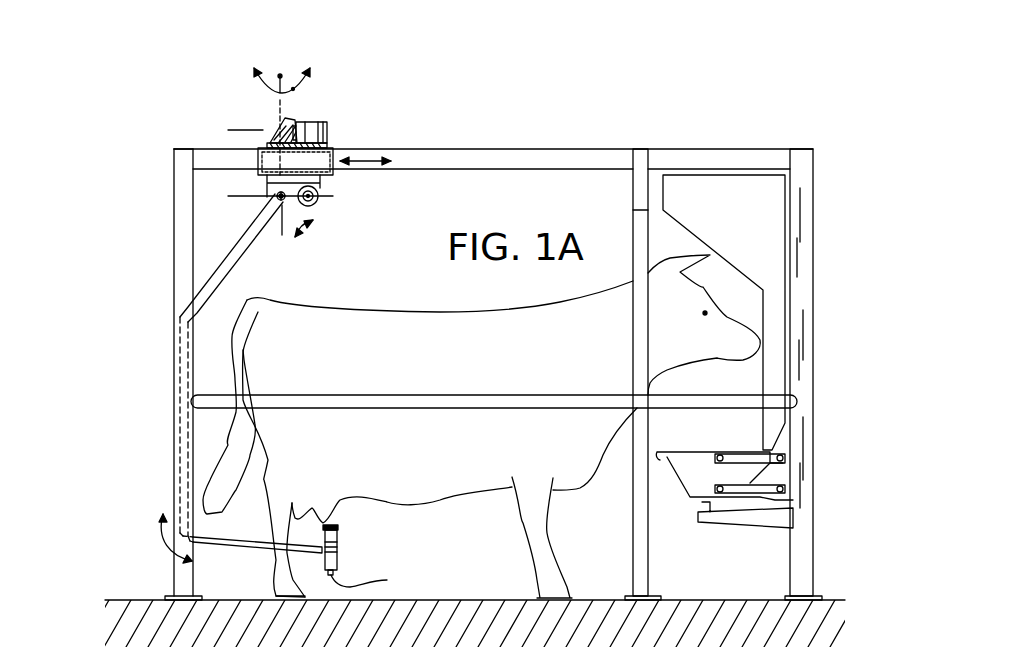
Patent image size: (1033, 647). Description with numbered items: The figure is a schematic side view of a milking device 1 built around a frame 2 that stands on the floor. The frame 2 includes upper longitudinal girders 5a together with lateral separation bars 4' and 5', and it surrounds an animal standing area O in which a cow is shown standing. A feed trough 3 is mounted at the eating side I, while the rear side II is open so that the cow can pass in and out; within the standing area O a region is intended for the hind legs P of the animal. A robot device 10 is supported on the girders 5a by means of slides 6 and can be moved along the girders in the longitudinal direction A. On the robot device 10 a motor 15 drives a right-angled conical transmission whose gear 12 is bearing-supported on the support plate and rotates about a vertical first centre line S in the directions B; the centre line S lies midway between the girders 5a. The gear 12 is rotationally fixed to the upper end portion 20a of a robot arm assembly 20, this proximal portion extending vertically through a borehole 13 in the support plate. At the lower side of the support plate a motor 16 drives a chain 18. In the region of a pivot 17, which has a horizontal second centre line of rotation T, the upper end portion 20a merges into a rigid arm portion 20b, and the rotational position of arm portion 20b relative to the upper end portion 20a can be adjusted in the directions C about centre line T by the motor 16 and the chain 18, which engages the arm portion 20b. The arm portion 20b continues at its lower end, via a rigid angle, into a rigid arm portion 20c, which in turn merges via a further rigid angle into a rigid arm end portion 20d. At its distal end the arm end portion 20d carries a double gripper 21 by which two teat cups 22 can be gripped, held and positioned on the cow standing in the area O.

The milking device 1 is at (632, 110).
The robot device 10 is at (223, 108).
The frame 2 is at (182, 225).
The feed trough 3 is at (692, 488).
The lateral separation bar 4' is at (614, 374).
The lateral separation bar 5' is at (494, 425).
The upper longitudinal girder 5a is at (507, 160).
The slide 6 is at (263, 163).
The conical gear 12 is at (287, 108).
The borehole 13 is at (270, 133).
The motor 15 is at (313, 133).
The motor 16 is at (292, 200).
The pivot 17 is at (278, 197).
The chain 18 is at (313, 220).
The robot arm assembly 20 is at (220, 275).
The upper end portion 20a is at (260, 143).
The arm portion 20b is at (230, 260).
The arm portion 20c is at (182, 385).
The arm end portion 20d is at (228, 540).
The double gripper 21 is at (332, 550).
The teat cup 22 is at (332, 533).
The centre line S is at (281, 76).
The directions of rotation B is at (293, 89).
The longitudinal direction A is at (365, 160).
The centre line of rotation T is at (273, 196).
The directions of adjustment C is at (313, 238).
The hind legs P is at (290, 595).
The animal standing area O is at (462, 600).
The eating side I is at (769, 374).
The rear side II is at (157, 374).